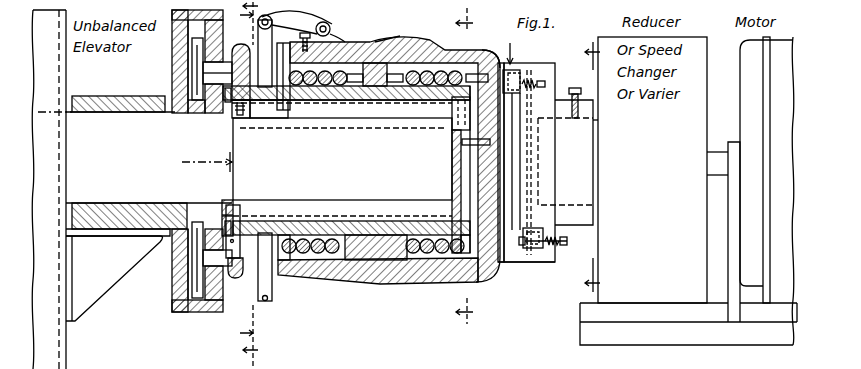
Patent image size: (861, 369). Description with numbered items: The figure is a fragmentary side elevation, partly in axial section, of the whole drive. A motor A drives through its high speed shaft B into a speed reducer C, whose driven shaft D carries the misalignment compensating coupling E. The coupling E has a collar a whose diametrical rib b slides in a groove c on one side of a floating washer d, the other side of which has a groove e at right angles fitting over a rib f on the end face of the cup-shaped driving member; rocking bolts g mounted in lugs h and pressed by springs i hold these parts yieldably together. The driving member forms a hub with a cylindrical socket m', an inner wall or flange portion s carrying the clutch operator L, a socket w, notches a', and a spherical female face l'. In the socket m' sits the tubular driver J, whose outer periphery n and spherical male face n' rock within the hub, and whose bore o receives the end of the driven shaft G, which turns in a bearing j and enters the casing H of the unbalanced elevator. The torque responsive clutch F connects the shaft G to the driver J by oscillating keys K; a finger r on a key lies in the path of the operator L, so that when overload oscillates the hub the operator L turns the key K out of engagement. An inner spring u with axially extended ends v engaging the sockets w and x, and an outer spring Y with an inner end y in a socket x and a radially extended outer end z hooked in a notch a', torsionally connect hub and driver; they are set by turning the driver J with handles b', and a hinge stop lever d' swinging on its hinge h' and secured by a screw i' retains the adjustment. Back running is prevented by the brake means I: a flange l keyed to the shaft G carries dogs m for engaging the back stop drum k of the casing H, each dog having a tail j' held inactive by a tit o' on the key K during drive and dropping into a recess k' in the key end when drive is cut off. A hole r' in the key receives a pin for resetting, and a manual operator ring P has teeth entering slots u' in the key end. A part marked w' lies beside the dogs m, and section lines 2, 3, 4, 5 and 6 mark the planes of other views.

The frame or casing H is at (52, 189).
The driven shaft G is at (149, 157).
The bearing j is at (126, 208).
The brake means I is at (207, 311).
The back stop drum k is at (204, 180).
The dogs m is at (170, 169).
The hub w' is at (185, 164).
The tail j' is at (189, 179).
The slots u' is at (228, 123).
The hole r' is at (261, 159).
The hinge stop lever d' is at (243, 62).
The outer end of outer spring z is at (284, 78).
The notches a' is at (275, 164).
The handles b' is at (275, 316).
The screw i' is at (304, 21).
The hinge h' is at (316, 31).
The torque responsive clutch F is at (368, 41).
The socket in driver x is at (382, 48).
The outer spring Y is at (327, 96).
The inner end of outer spring y is at (333, 85).
The inner spring u is at (395, 55).
The ends of inner spring v is at (394, 82).
The socket in hub w is at (492, 51).
The movable clutch means K is at (408, 122).
The driver member J is at (400, 112).
The outer cylindrical periphery n is at (318, 203).
The male face n' is at (386, 211).
The finger r is at (449, 122).
The clutch operator L is at (480, 147).
The tit o' is at (217, 193).
The recess k' is at (236, 205).
The manual operator P is at (239, 279).
The flange l is at (232, 313).
The cylindrical bore or socket m' is at (302, 271).
The cylindrical bore of driver o is at (379, 296).
The female face l' is at (408, 236).
The inner wall or flange portion s is at (500, 168).
The collar a is at (539, 162).
The lugs h is at (521, 69).
The springs i is at (544, 68).
The rocking bolts g is at (546, 85).
The diametrical groove e is at (513, 174).
The diametrical rib f is at (498, 190).
The diametrical groove c is at (533, 250).
The diametrical rib b is at (543, 260).
The floating washer d is at (524, 268).
The mis-alignment compensator coupling E is at (534, 262).
The driven shaft of speed reducer D is at (596, 138).
The speed reducer C is at (652, 170).
The high speed shaft B is at (716, 156).
The motor A is at (688, 191).
The section line 2 is at (352, 105).
The section line 3 is at (598, 167).
The section line 4 is at (242, 184).
The section line 5 is at (470, 166).
The section line 6 is at (258, 180).